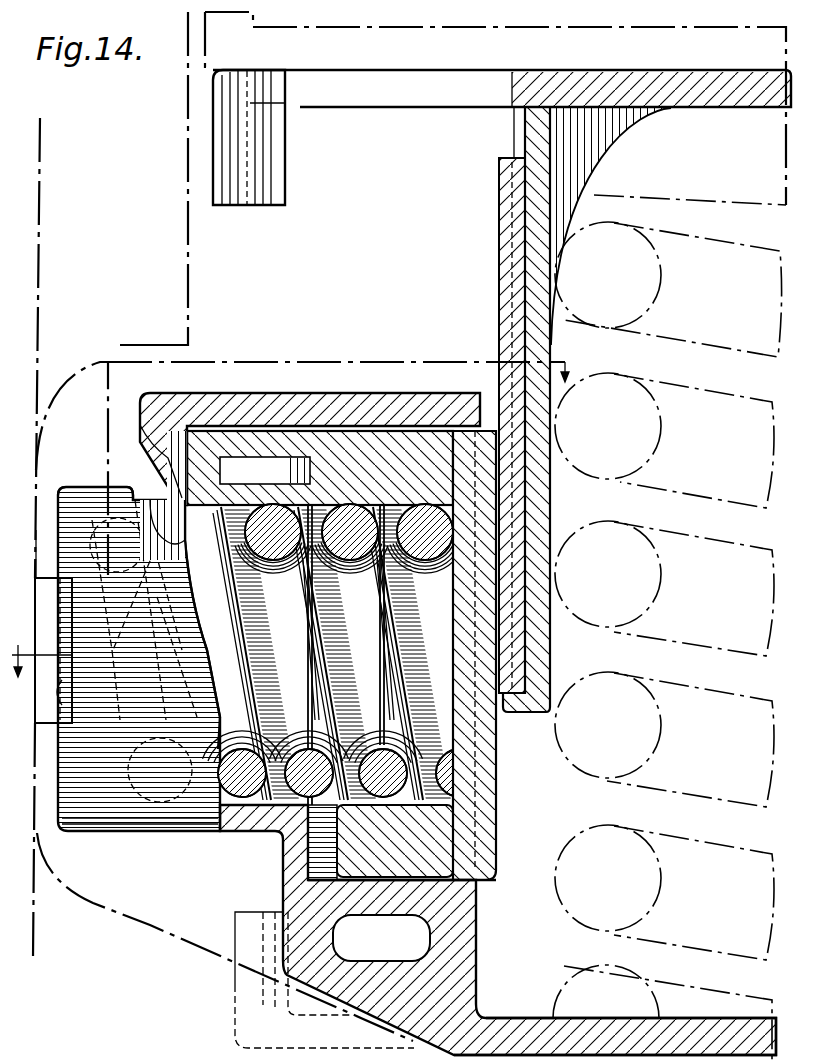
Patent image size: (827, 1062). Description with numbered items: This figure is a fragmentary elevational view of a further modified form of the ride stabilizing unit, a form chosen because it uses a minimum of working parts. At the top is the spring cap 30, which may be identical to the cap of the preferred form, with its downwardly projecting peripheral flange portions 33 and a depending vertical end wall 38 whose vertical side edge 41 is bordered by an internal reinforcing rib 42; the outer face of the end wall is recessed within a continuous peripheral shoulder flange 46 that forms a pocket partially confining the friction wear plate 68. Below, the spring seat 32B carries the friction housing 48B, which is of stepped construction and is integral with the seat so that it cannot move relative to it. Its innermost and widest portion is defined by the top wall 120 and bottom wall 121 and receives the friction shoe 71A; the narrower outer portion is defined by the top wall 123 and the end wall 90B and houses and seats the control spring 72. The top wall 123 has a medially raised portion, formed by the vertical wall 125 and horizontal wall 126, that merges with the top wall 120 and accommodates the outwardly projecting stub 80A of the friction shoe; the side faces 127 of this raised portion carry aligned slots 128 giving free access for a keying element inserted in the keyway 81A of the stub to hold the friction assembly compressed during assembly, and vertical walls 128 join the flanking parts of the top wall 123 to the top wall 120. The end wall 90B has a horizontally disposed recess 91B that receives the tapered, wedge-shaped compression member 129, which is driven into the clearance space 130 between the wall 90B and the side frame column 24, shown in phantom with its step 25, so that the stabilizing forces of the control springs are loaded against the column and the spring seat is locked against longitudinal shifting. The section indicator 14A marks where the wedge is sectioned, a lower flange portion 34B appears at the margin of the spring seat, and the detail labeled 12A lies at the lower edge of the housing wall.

The spring cap 30 is at (485, 86).
The peripheral flange portions 33 is at (289, 171).
The peripheral shoulder flange 46 is at (520, 127).
The rib 42 is at (618, 128).
The vertical side edge 41 is at (516, 226).
The wear plate 68 is at (499, 310).
The side frame column 24 is at (186, 222).
The step 25 is at (121, 344).
The horizontal wall 126 is at (218, 393).
The side faces 127 is at (250, 428).
The stub 80A is at (207, 431).
The top wall 120 is at (395, 406).
The vertical wall 125 is at (140, 425).
The top wall 123 is at (82, 482).
The keying slot 81A is at (262, 481).
The aligned slots 128 is at (310, 481).
The clearance space 130 is at (40, 524).
The compression member 129 is at (52, 631).
The recess 91B is at (73, 705).
The control spring 72 is at (378, 678).
The end wall 38 is at (551, 507).
The friction shoe 71A is at (486, 791).
The end wall 90B is at (36, 800).
The lower edge 12A is at (138, 834).
The friction housing 48B is at (217, 848).
The bottom wall 121 is at (377, 907).
The spring seat 32B is at (512, 1018).
The cover 34B is at (245, 985).
The section line 14A is at (302, 532).